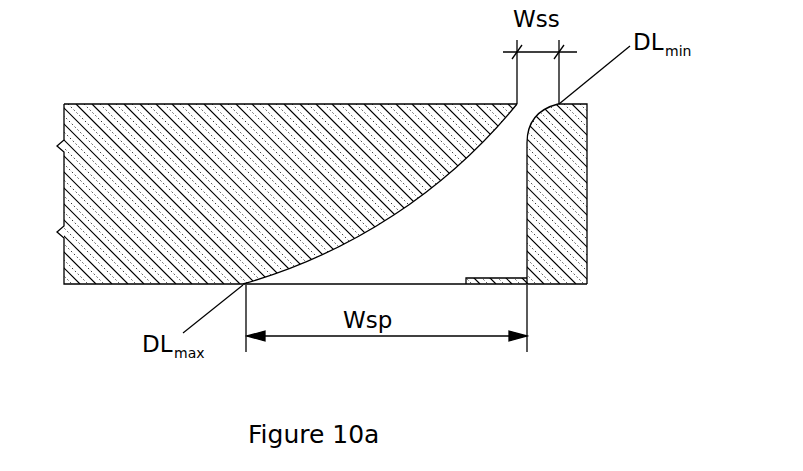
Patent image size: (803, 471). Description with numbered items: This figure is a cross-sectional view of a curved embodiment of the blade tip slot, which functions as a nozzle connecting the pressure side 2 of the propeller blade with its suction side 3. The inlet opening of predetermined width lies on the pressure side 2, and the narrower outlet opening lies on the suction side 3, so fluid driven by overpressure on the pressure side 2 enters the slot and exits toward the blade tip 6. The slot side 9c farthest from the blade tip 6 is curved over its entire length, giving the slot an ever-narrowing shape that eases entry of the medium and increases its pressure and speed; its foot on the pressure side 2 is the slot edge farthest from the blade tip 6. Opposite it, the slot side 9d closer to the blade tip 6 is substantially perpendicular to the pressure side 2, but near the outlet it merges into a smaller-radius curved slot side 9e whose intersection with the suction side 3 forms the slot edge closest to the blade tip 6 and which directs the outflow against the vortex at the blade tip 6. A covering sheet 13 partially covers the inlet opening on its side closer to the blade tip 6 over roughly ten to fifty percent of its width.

The pressure side 2 is at (108, 285).
The suction side 3 is at (178, 105).
The blade tip 6 is at (587, 174).
The curved slot side 9c is at (328, 252).
The slot side closer to the blade tip 9d is at (528, 228).
The curved slot side near the outlet opening 9e is at (535, 124).
The covering sheet 13 is at (495, 276).